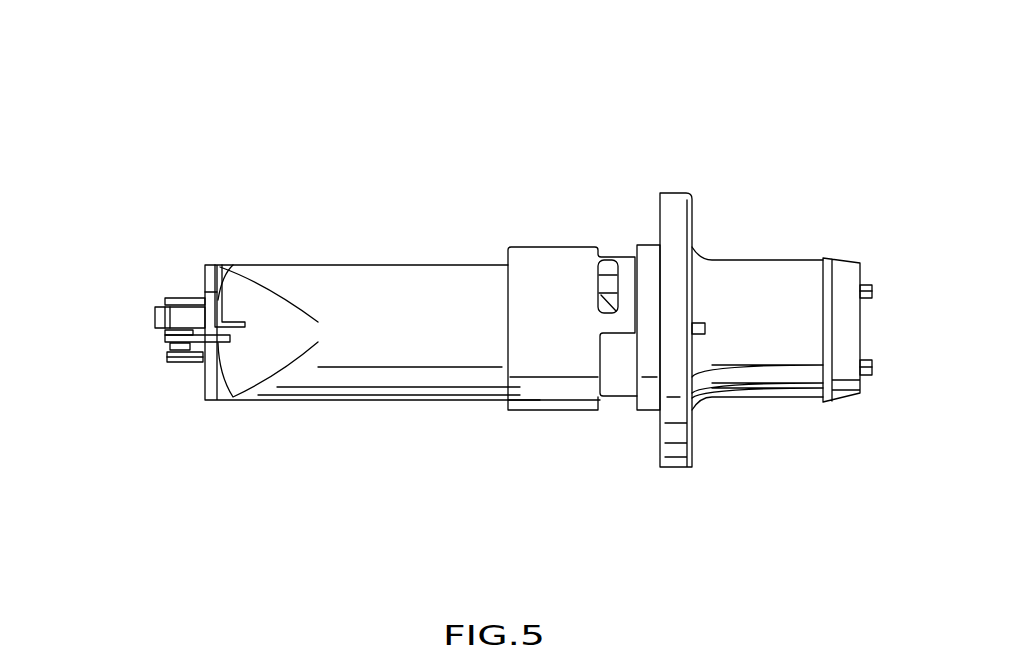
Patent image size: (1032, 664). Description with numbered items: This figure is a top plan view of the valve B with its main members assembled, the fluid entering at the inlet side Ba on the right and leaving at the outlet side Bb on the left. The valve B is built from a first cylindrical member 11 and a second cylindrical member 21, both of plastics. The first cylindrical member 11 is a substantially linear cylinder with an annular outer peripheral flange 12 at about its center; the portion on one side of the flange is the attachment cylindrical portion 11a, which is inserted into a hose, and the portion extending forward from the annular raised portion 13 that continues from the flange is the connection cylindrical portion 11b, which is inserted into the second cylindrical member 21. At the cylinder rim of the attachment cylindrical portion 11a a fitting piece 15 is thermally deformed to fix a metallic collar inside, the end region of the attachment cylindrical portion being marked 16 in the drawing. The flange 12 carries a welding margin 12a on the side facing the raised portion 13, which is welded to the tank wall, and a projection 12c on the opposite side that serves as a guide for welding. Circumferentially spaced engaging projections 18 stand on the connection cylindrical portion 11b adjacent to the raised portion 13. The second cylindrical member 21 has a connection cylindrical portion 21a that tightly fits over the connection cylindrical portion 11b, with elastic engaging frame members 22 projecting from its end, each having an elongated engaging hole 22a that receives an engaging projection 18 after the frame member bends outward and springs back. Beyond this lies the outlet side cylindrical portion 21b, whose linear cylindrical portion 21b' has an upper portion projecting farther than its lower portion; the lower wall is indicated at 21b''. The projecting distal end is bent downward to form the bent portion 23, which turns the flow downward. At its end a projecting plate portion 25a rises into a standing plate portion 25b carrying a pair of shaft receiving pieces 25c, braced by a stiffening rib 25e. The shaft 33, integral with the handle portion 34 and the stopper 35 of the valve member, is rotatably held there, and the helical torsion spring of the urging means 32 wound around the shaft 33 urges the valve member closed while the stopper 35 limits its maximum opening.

The valve B is at (784, 120).
The inlet side Ba is at (822, 403).
The outlet side Bb is at (273, 400).
The first cylindrical member 11 is at (797, 455).
The attachment cylindrical portion 11a is at (767, 400).
The connection cylindrical portion 11b is at (612, 367).
The outer peripheral flange 12 is at (681, 196).
The welding margin 12a is at (661, 197).
The projection 12c is at (707, 328).
The raised portion 13 is at (647, 245).
The fitting piece 15 is at (871, 291).
The end cap 16 is at (823, 257).
The engaging projection 18 is at (597, 283).
The second cylindrical member 21 is at (578, 495).
The connection cylindrical portion 21a is at (540, 410).
The outlet side cylindrical portion 21b is at (454, 441).
The linear cylindrical portion 21b' is at (393, 460).
The holder side wall portion 21b'' is at (340, 441).
The elastic engaging frame member 22 is at (617, 247).
The engaging hole 22a is at (607, 262).
The bent portion 23 is at (254, 293).
The projecting plate portion 25a is at (210, 400).
The standing plate portion 25b is at (205, 292).
The shaft receiving piece 25c is at (180, 298).
The stiffening rib 25e is at (295, 298).
The urging means 32 is at (167, 331).
The shaft 33 is at (167, 350).
The handle portion 34 is at (198, 315).
The stopper 35 is at (155, 317).